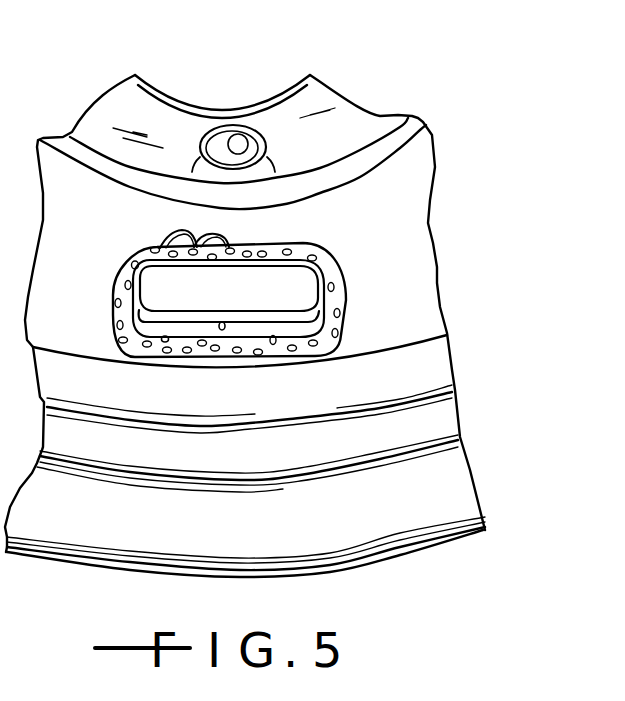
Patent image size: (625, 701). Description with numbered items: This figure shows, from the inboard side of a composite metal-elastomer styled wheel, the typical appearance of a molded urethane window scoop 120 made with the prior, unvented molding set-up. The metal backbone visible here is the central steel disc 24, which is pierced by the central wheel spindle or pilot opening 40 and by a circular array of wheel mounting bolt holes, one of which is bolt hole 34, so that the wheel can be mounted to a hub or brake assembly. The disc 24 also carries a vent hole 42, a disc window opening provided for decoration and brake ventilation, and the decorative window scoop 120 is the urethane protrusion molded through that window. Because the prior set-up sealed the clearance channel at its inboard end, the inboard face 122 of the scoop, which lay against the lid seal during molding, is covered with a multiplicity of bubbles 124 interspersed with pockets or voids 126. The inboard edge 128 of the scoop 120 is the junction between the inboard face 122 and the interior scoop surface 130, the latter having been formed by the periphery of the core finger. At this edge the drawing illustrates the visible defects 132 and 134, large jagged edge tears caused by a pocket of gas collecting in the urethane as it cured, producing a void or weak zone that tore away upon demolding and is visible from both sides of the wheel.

The central steel disc 24 is at (441, 164).
The wheel mounting bolt hole 34 is at (247, 150).
The central wheel spindle or pilot opening 40 is at (277, 97).
The vent hole 42 is at (211, 296).
The decorative window scoop 120 is at (298, 308).
The inboard face 122 is at (345, 323).
The bubbles 124 is at (162, 232).
The pockets or voids 126 is at (318, 350).
The inboard edge 128 is at (221, 330).
The interior scoop surface 130 is at (248, 335).
The visible defect 132 is at (164, 342).
The visible defect 134 is at (127, 350).